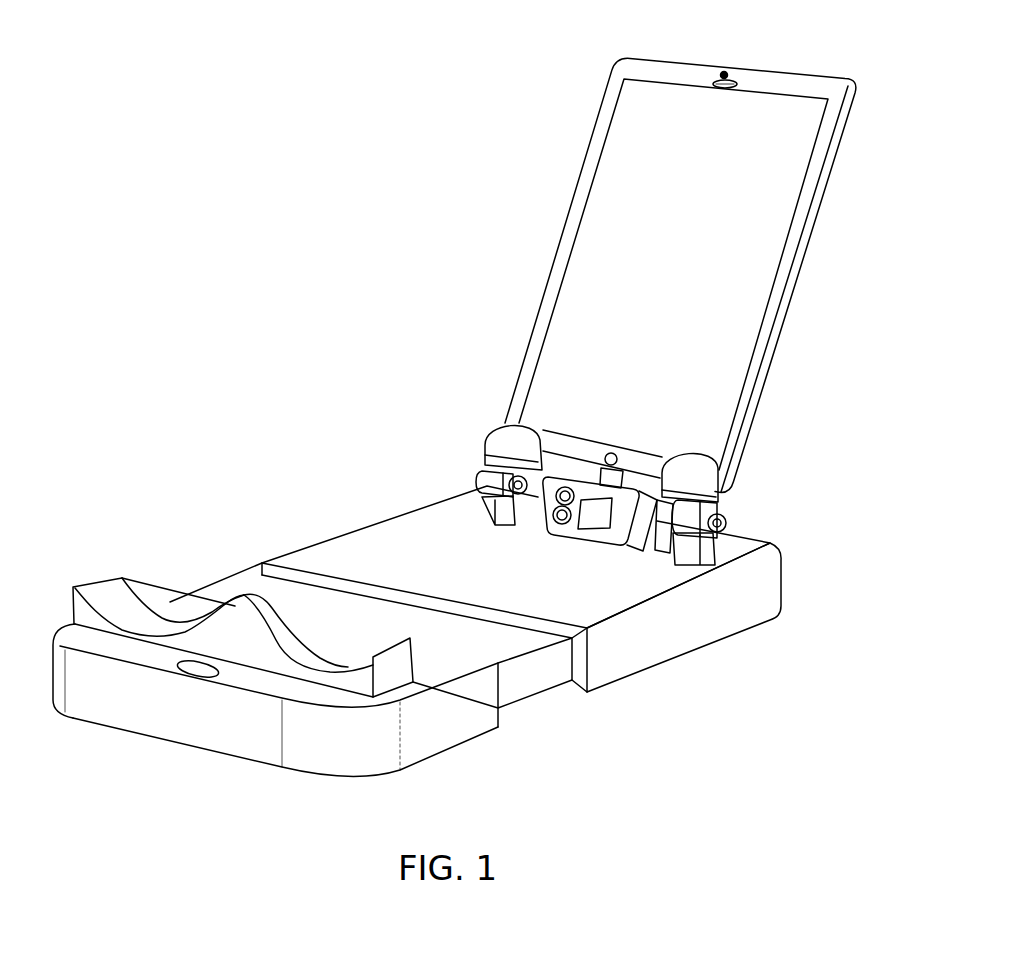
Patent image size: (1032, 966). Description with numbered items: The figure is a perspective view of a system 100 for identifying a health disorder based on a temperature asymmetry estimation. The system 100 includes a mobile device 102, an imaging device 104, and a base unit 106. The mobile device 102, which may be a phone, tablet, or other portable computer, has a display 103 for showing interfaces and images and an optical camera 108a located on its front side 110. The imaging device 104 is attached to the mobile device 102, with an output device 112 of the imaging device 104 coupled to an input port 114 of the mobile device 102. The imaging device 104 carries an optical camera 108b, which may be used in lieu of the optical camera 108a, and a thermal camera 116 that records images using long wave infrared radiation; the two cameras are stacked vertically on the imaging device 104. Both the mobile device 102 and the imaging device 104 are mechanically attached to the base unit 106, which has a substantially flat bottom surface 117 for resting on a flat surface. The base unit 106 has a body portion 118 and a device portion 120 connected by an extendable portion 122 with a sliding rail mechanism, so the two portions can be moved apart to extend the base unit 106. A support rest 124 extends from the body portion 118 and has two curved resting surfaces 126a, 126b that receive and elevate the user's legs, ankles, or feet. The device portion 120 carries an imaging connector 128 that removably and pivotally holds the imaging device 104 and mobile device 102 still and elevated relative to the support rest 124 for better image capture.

The system 100 is at (427, 194).
The mobile device 102 is at (826, 187).
The display 103 is at (648, 112).
The imaging device 104 is at (612, 545).
The base unit 106 is at (294, 545).
The optical camera 108a is at (727, 70).
The optical camera 108b is at (548, 505).
The front side 110 is at (802, 248).
The output device 112 is at (480, 488).
The input port 114 is at (487, 455).
The thermal camera 116 is at (550, 485).
The substantially flat bottom surface 117 is at (453, 747).
The body portion 118 is at (167, 603).
The device portion 120 is at (668, 598).
The extendable portion 122 is at (532, 677).
The support rest 124 is at (80, 603).
The resting surface 126a is at (117, 607).
The resting surface 126b is at (282, 633).
The imaging connector 128 is at (655, 548).